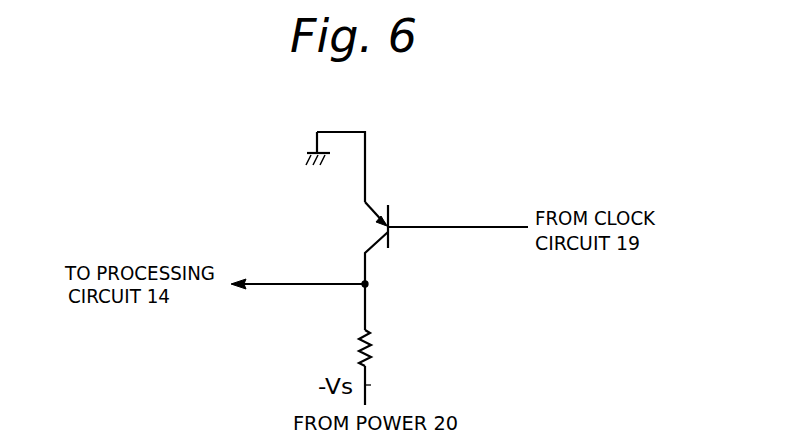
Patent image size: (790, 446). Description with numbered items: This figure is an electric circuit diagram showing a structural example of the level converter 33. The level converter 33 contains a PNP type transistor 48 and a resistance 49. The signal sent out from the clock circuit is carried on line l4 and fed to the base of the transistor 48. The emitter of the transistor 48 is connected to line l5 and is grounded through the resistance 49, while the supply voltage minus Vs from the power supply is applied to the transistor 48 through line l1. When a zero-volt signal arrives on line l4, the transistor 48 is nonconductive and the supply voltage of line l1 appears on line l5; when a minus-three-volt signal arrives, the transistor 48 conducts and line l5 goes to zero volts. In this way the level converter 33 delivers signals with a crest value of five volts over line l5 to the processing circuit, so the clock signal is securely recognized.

The level converter 33 is at (489, 106).
The PNP type transistor 48 is at (391, 243).
The resistance 49 is at (368, 344).
The line l4 is at (480, 226).
The line l5 is at (292, 283).
The line l1 is at (371, 385).